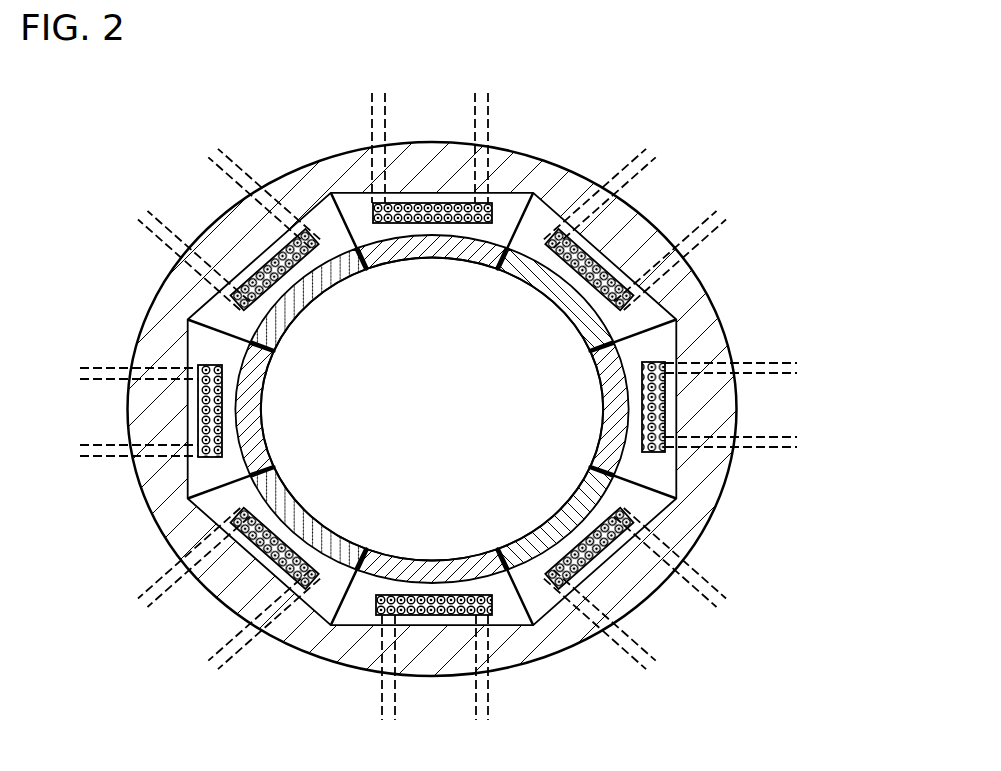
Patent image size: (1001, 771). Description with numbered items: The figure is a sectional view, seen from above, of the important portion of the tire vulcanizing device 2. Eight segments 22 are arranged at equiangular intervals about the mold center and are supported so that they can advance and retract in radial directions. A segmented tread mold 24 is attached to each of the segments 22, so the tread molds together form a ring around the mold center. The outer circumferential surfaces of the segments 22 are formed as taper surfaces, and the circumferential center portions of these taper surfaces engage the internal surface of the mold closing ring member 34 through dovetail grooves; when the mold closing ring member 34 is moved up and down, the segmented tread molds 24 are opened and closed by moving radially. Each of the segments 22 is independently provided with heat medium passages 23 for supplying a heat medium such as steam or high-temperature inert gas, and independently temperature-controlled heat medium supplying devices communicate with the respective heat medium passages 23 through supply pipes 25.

The tire vulcanizing device 2 is at (160, 175).
The segments 22 is at (602, 470).
The heat medium passages 23 is at (563, 507).
The segmented tread molds 24 is at (262, 408).
The supply pipes 25 is at (247, 180).
The mold closing ring member 34 is at (535, 152).